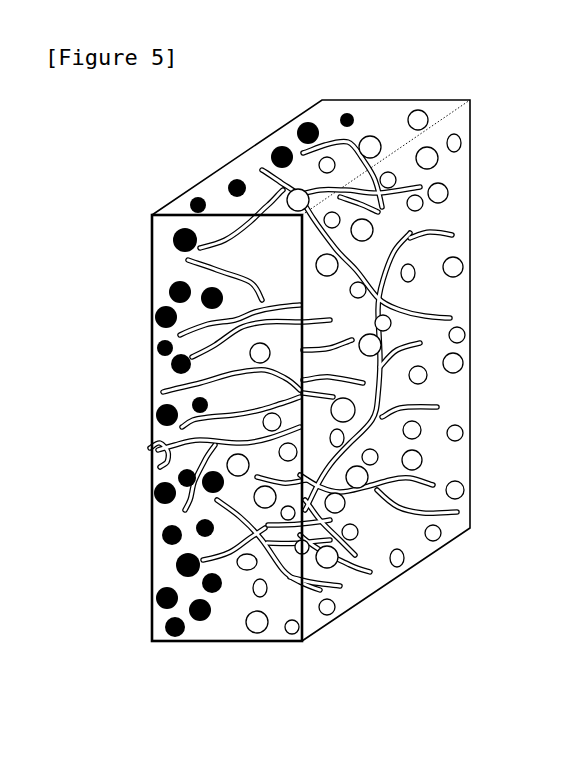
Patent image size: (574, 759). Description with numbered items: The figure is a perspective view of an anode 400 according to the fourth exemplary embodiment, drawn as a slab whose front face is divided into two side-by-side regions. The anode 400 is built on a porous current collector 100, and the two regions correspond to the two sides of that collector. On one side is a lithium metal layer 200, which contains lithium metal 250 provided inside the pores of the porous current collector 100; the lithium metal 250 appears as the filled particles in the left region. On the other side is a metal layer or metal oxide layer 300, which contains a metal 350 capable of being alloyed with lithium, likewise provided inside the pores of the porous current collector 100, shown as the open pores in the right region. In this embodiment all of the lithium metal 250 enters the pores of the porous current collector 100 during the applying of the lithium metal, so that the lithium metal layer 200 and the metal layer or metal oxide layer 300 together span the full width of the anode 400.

The porous current collector 100 is at (258, 415).
The lithium metal layer 200 is at (174, 454).
The lithium metal 250 is at (157, 542).
The metal layer or metal oxide layer 300 is at (346, 518).
The metal capable of being alloyed with lithium 350 is at (337, 605).
The anode 400 is at (170, 699).